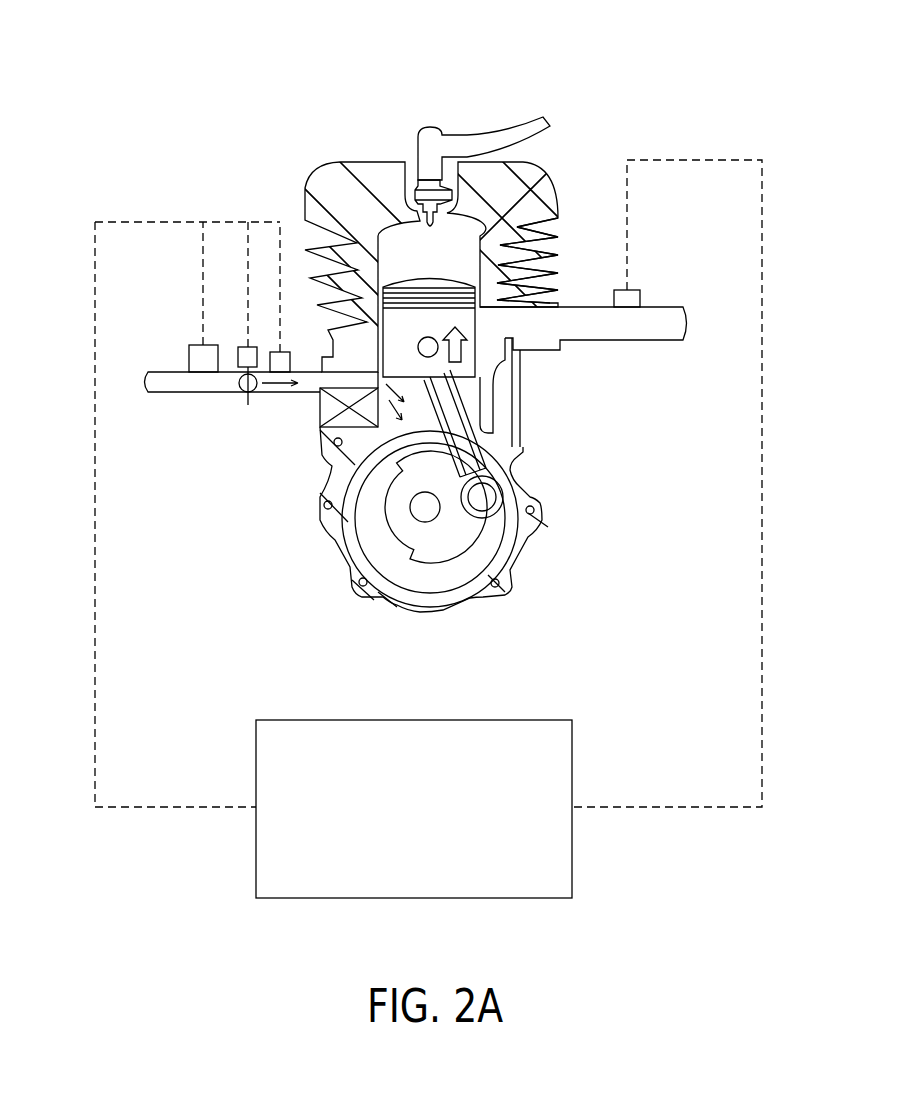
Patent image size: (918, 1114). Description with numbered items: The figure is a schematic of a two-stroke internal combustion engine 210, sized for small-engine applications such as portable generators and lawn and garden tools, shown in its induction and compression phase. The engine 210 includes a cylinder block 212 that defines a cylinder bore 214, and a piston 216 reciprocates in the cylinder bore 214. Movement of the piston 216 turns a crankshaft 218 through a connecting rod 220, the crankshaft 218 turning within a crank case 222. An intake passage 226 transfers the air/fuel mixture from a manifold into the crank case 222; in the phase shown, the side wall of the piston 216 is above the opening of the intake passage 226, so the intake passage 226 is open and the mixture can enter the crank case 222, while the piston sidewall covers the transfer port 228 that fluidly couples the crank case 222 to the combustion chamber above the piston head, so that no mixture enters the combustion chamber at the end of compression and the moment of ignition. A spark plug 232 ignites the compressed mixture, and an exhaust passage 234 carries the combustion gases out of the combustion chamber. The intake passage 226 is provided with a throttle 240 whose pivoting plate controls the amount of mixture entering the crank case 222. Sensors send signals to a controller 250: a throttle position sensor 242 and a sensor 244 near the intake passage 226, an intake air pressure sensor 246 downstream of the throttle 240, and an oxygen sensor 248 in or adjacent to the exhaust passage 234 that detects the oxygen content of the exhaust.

The internal combustion engine 210 is at (615, 92).
The cylinder block 212 is at (487, 172).
The cylinder bore 214 is at (537, 188).
The piston 216 is at (400, 343).
The crankshaft 218 is at (468, 523).
The connecting rod 220 is at (470, 458).
The crank case 222 is at (362, 548).
The intake passage 226 is at (157, 382).
The transfer port 228 is at (503, 405).
The spark plug 232 is at (427, 200).
The exhaust passage 234 is at (638, 340).
The throttle 240 is at (246, 396).
The throttle position sensor 242 is at (247, 347).
The sensor 244 is at (201, 344).
The intake air pressure sensor 246 is at (282, 351).
The oxygen sensor 248 is at (633, 290).
The controller 250 is at (433, 816).